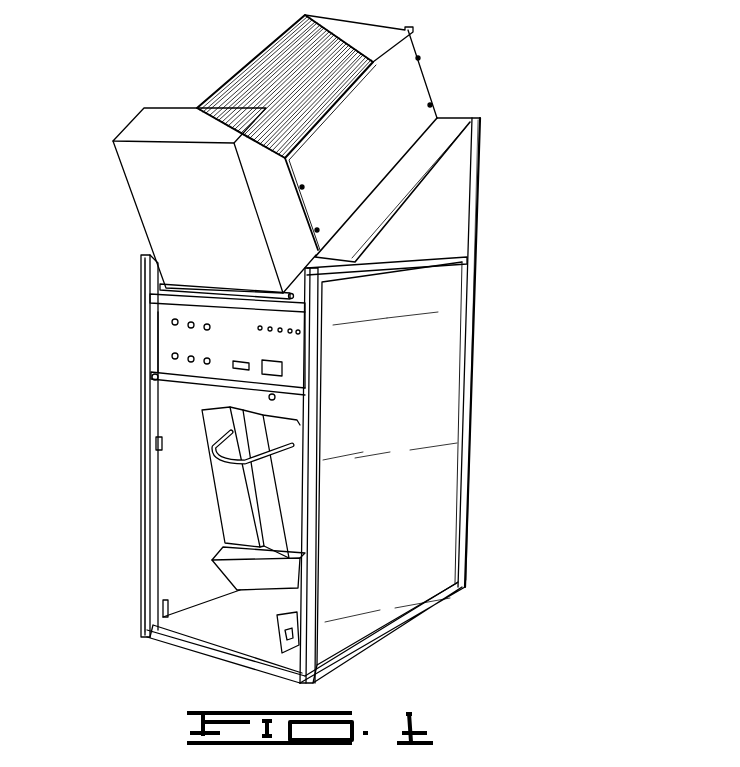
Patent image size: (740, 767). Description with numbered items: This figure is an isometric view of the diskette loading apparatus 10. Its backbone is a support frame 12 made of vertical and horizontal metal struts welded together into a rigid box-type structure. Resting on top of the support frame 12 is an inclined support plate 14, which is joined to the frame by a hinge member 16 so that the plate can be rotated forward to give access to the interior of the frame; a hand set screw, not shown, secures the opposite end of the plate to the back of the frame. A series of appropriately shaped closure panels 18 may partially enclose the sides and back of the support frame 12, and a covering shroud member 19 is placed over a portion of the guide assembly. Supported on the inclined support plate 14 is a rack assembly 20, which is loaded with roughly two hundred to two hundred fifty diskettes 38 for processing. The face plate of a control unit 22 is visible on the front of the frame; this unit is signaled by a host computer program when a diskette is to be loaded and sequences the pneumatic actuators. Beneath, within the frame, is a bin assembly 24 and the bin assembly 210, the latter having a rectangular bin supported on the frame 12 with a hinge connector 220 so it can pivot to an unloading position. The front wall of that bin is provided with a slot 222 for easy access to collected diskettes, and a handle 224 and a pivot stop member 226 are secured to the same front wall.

The diskette loading apparatus 10 is at (210, 76).
The support frame 12 is at (473, 357).
The inclined support plate 14 is at (450, 130).
The hinge member 16 is at (188, 292).
The closure panels 18 is at (453, 177).
The covering shroud member 19 is at (145, 172).
The rack assembly 20 is at (417, 43).
The control unit 22 is at (170, 338).
The bin assembly 24 is at (228, 502).
The diskettes 38 is at (330, 27).
The bin assembly 210 is at (227, 530).
The hinge connector 220 is at (260, 600).
The slot 222 is at (266, 524).
The handle 224 is at (293, 470).
The pivot stop member 226 is at (290, 572).